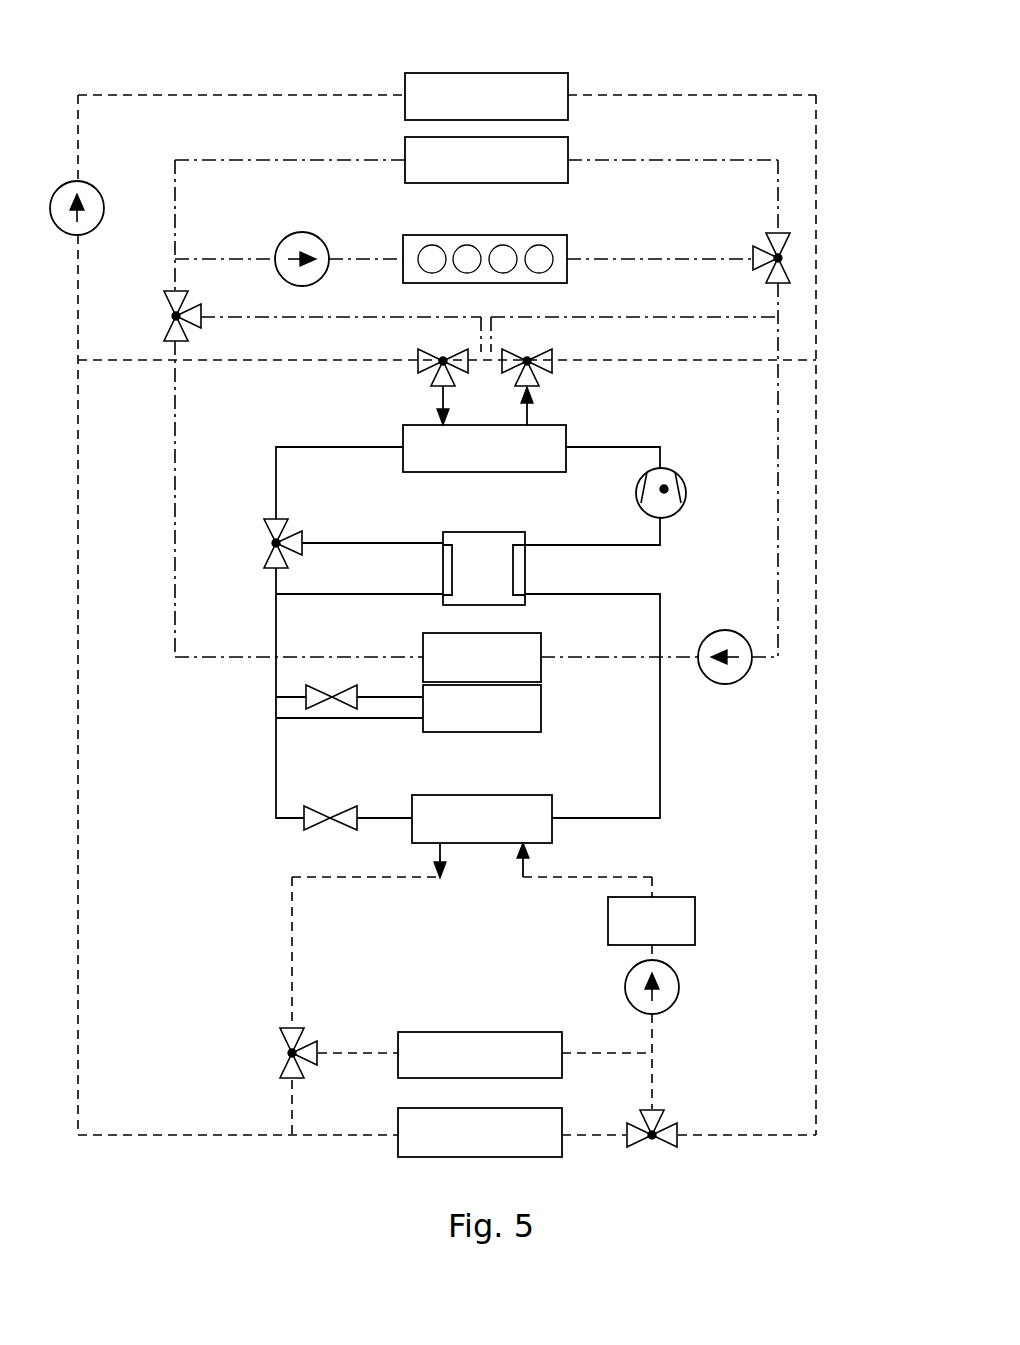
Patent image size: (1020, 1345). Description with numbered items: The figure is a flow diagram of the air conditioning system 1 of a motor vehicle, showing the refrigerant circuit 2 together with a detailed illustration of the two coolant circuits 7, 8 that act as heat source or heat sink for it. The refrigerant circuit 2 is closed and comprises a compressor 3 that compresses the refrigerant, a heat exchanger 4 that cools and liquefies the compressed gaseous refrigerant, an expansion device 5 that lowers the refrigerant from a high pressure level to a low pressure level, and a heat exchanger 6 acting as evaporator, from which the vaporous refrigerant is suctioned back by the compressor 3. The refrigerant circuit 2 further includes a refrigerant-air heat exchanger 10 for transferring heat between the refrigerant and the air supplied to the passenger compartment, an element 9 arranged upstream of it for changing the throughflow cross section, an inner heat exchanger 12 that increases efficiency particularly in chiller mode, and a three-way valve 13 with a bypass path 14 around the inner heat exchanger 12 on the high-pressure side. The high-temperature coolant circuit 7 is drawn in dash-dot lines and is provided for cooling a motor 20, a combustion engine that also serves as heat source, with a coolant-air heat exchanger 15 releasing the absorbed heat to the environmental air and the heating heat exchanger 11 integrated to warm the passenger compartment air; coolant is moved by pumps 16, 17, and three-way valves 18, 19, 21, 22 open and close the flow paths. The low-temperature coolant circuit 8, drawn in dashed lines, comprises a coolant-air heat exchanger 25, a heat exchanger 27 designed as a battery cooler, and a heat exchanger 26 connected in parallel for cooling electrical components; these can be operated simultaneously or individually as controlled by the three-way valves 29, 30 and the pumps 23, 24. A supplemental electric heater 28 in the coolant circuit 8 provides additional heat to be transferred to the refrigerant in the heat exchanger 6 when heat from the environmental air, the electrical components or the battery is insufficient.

The air conditioning system 1 is at (831, 104).
The refrigerant circuit 2 is at (671, 733).
The compressor 3 is at (667, 487).
The heat exchanger 4 is at (484, 448).
The expansion device 5 is at (332, 815).
The heat exchanger 6 is at (482, 836).
The coolant circuit 7 is at (680, 158).
The coolant circuit 8 is at (622, 97).
The element for changing a throughflow cross section 9 is at (330, 702).
The heat exchanger 10 is at (482, 708).
The heating heat exchanger 11 is at (482, 657).
The inner heat exchanger 12 is at (484, 568).
The three-way valve 13 is at (279, 540).
The bypass path 14 is at (275, 579).
The coolant-air heat exchanger 15 is at (486, 160).
The pump 16 is at (303, 243).
The pump 17 is at (724, 678).
The three-way valve 18 is at (173, 313).
The three-way valve 19 is at (775, 257).
The motor 20 is at (560, 252).
The three-way valve 21 is at (440, 365).
The three-way valve 22 is at (531, 367).
The pump 23 is at (88, 198).
The pump 24 is at (677, 988).
The coolant-air heat exchanger 25 is at (486, 96).
The heat exchanger 26 is at (480, 1132).
The heat exchanger 27 is at (480, 1055).
The supplemental electric heater 28 is at (651, 921).
The three-way valve 29 is at (296, 1050).
The three-way valve 30 is at (656, 1132).